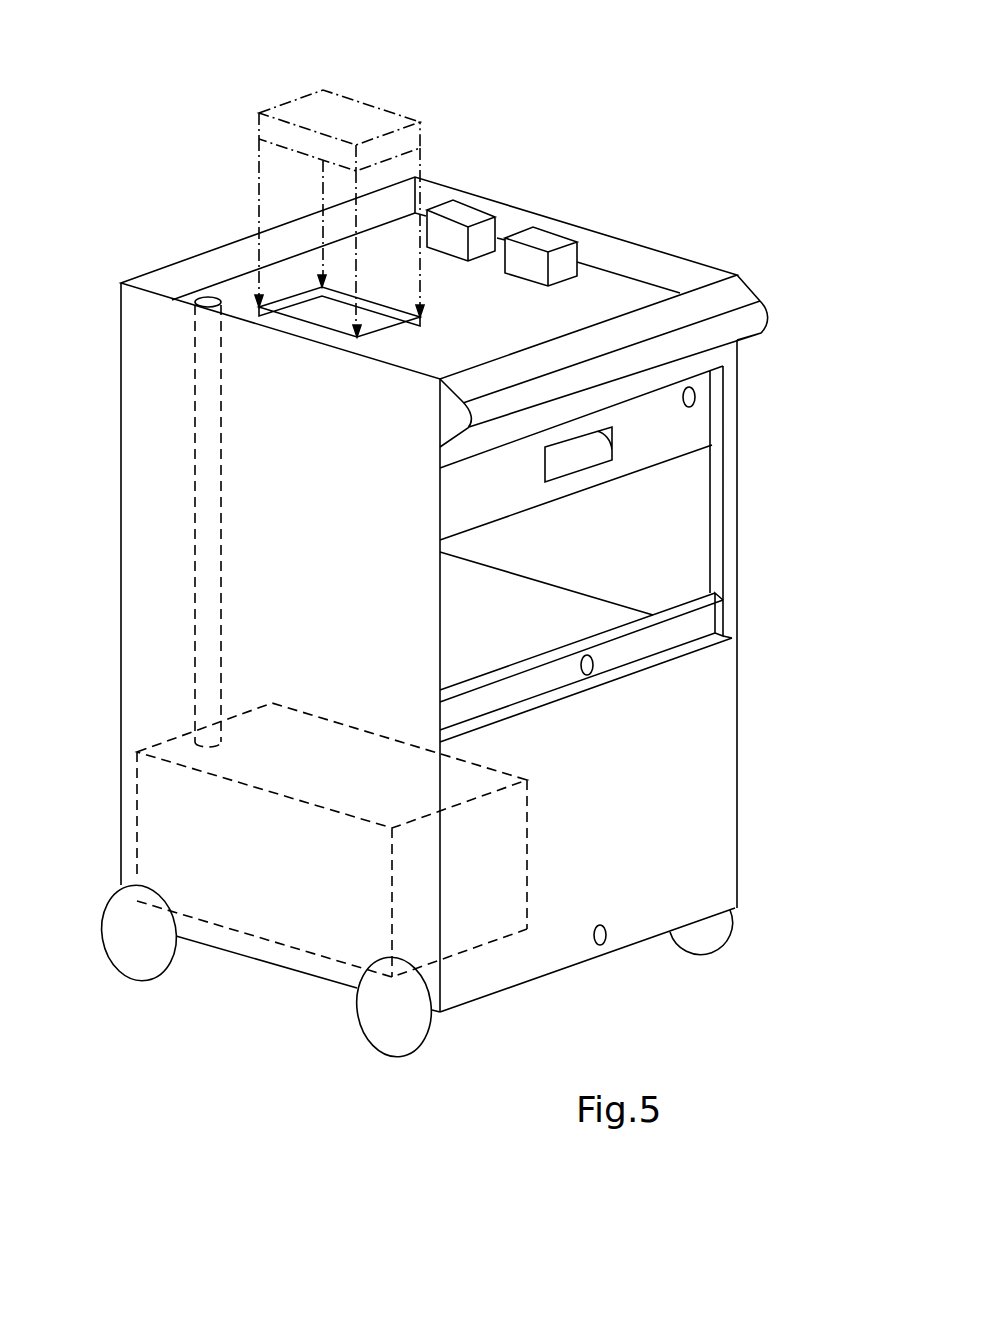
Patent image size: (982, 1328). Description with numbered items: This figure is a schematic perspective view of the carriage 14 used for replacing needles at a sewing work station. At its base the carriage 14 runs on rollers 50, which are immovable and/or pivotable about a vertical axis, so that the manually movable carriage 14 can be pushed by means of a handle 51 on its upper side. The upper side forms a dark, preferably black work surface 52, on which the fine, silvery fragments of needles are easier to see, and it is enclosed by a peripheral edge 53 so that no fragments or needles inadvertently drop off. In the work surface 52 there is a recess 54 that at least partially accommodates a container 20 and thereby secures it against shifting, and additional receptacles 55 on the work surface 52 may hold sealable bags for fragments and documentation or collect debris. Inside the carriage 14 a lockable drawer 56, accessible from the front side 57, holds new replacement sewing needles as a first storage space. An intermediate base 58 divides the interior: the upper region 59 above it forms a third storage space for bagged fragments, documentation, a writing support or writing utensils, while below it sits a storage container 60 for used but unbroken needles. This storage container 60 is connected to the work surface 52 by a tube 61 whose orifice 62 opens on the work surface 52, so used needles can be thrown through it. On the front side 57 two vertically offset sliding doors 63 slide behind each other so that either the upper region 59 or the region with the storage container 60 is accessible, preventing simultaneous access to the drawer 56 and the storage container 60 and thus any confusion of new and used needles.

The carriage 14 is at (712, 183).
The container 20 is at (422, 118).
The rollers 50 is at (403, 1158).
The handle 51 is at (748, 316).
The work surface 52 is at (600, 297).
The peripheral edge 53 is at (688, 272).
The recess 54 is at (395, 322).
The receptacles 55 is at (463, 213).
The drawer 56 is at (668, 412).
The front side 57 is at (768, 783).
The intermediate base 58 is at (487, 652).
The upper region 59 is at (653, 543).
The storage container 60 is at (317, 914).
The tube 61 is at (228, 505).
The orifice 62 is at (212, 295).
The sliding doors 63 is at (713, 702).